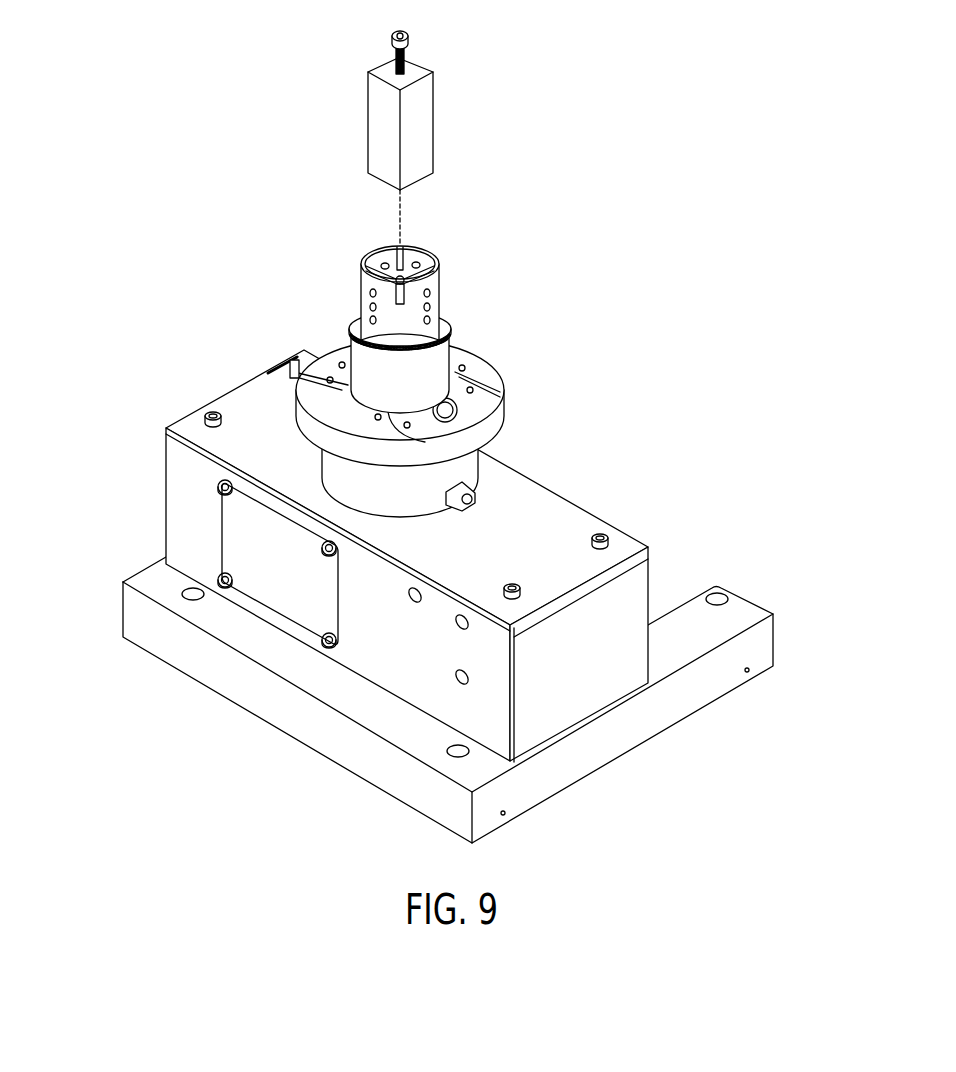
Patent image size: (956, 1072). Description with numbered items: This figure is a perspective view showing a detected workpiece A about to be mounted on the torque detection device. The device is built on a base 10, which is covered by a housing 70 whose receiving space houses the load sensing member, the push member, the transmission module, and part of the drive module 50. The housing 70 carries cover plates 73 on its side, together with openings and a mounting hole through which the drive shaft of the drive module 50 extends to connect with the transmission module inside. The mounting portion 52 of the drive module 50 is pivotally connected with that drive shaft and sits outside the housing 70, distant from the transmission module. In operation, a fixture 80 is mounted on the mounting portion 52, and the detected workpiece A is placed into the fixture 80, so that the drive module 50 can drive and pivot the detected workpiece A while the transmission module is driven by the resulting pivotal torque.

The base 10 is at (650, 715).
The housing 70 is at (530, 532).
The cover plate 73 is at (283, 573).
The drive module 50 is at (498, 362).
The mounting portion 52 is at (440, 275).
The fixture 80 is at (384, 140).
The detected workpiece A is at (410, 58).